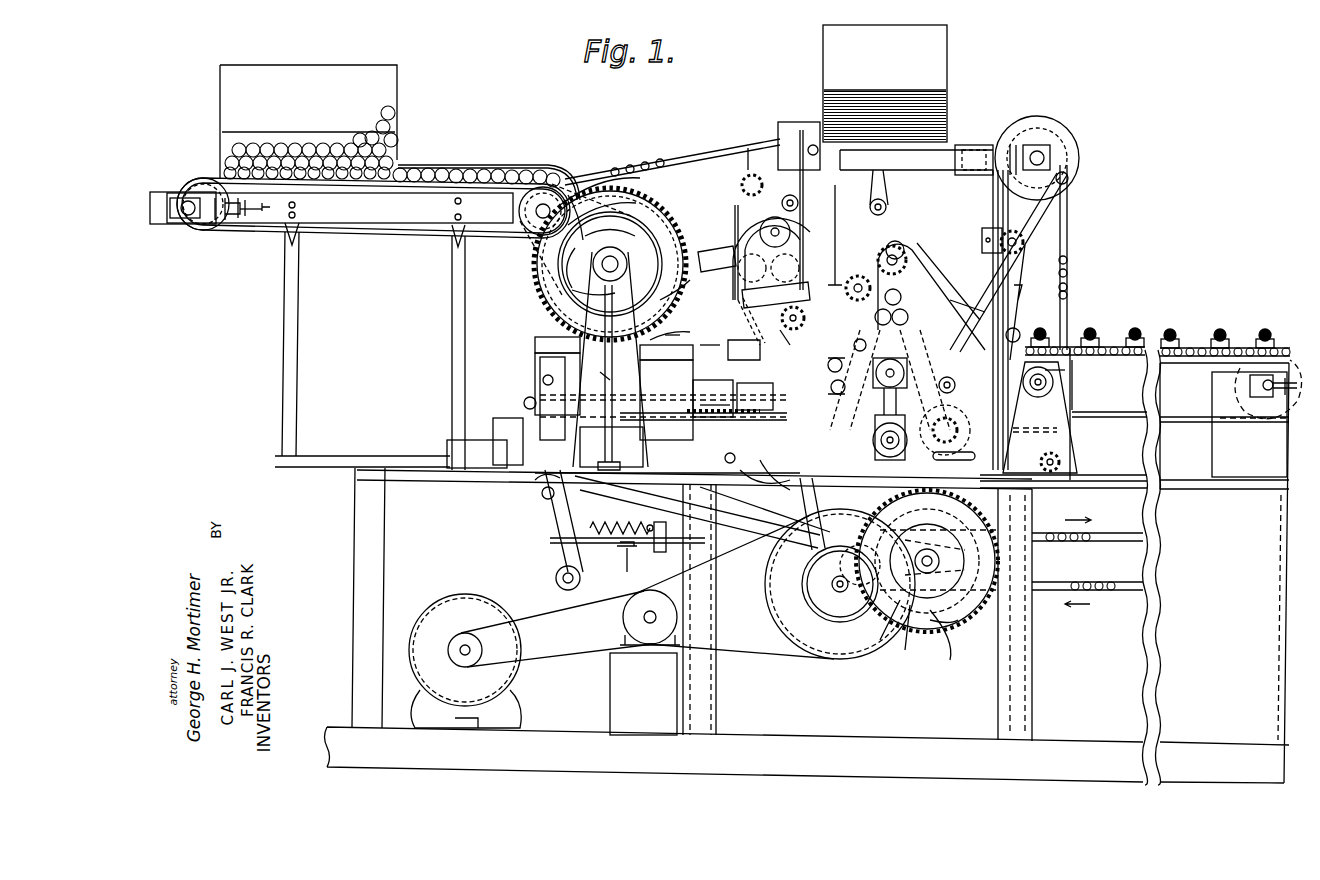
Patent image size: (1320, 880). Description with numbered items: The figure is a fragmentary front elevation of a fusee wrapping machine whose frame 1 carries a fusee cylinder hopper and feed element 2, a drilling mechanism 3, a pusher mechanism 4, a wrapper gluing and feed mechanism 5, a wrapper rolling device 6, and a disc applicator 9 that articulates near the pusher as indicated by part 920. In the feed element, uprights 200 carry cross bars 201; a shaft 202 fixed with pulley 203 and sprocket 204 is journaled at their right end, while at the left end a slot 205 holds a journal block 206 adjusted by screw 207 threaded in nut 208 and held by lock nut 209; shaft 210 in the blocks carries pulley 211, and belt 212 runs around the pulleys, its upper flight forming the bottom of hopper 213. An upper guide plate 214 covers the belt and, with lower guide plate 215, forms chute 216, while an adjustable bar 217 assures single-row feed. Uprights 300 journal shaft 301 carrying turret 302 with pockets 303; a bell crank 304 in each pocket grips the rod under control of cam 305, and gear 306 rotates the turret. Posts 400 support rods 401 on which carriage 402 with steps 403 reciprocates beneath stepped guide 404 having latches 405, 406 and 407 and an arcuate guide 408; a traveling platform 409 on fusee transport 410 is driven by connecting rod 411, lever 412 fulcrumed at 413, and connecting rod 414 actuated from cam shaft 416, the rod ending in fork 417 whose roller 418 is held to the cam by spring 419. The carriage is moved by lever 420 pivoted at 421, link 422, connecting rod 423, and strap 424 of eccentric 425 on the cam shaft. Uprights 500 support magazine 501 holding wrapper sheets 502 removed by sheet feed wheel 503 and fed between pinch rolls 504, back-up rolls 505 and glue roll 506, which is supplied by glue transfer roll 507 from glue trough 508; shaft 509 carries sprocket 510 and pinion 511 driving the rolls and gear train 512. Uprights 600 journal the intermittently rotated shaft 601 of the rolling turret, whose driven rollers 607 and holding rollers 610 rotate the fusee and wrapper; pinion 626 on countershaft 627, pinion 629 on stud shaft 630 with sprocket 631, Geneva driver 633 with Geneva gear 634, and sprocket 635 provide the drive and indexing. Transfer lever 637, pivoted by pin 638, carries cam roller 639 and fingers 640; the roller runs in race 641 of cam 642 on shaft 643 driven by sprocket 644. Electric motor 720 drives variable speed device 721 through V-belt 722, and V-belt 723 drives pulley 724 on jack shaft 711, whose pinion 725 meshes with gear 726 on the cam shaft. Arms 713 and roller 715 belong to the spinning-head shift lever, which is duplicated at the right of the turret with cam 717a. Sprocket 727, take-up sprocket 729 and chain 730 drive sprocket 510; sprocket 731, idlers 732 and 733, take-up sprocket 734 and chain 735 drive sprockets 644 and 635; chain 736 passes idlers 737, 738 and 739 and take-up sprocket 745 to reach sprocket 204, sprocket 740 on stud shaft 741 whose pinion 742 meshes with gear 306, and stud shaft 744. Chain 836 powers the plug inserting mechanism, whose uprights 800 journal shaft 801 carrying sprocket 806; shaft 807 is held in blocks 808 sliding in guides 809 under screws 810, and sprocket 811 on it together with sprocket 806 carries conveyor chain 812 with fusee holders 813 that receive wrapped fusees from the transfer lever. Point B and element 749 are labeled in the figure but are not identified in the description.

The machine frame 1 is at (346, 541).
The feed conveyor 2 is at (408, 108).
The transfer gear assembly 3 is at (648, 220).
The filling station 4 is at (536, 348).
The liquid supply station 5 is at (800, 113).
The drive assembly 6 is at (848, 343).
The capping station 9 is at (744, 336).
The conveyor legs 200 is at (300, 282).
The conveyor frame rail 201 is at (330, 228).
The guide arm 202 is at (596, 192).
The conveyor drive chain 203 is at (530, 246).
The conveyor drive pulley 204 is at (520, 236).
The tension bracket 205 is at (165, 224).
The bearing plate 206 is at (209, 232).
The adjusting rod 207 is at (258, 222).
The bearing block 208 is at (226, 226).
The adjusting screw 209 is at (238, 197).
The conveyor idler pulley 210 is at (203, 193).
The pulley shaft 211 is at (192, 230).
The conveyor belt 212 is at (373, 190).
The hopper 213 is at (220, 101).
The articles on belt 214 is at (463, 168).
The guide lever 215 is at (570, 200).
The guide plate 216 is at (592, 212).
The articles in hopper 217 is at (396, 160).
The adjustment point B is at (273, 207).
The transfer gear 300 is at (598, 302).
The gear hub 301 is at (627, 265).
The gear rim ring 302 is at (661, 243).
The cam segment 303 is at (582, 287).
The cam arm 304 is at (610, 226).
The cam follower 305 is at (575, 266).
The connecting rod 306 is at (670, 300).
The table 400 is at (507, 458).
The table plate 401 is at (726, 350).
The filling head block 402 is at (535, 368).
The support bracket 403 is at (535, 348).
The actuating arm 404 is at (678, 331).
The link 405 is at (675, 328).
The pivot link 406 is at (701, 347).
The lever 407 is at (793, 334).
The cam link 408 is at (680, 288).
The rollers 409 is at (836, 388).
The slide 410 is at (717, 395).
The slide housing 411 is at (712, 396).
The guide block 412 is at (524, 405).
The pivot pin 413 is at (542, 494).
The adjusting rod 414 is at (612, 544).
The cam disc 416 is at (927, 573).
The cam track 417 is at (958, 586).
The cam follower 418 is at (962, 571).
The spring 419 is at (621, 521).
The lever arm 420 is at (555, 518).
The lever pivot 421 is at (556, 580).
The connecting link 422 is at (560, 476).
The push rod 423 is at (708, 506).
The crank 424 is at (915, 640).
The cam gear 425 is at (925, 517).
The supply shaft 500 is at (992, 200).
The liquid tank 501 is at (947, 67).
The liquid 502 is at (877, 90).
The supply pipe 503 is at (916, 160).
The bracket roller 504 is at (872, 200).
The support post 505 is at (848, 235).
The valve plate 506 is at (776, 295).
The valve rollers 507 is at (745, 283).
The nozzle block 508 is at (718, 248).
The pulley 509 is at (762, 228).
The guide arch 510 is at (735, 226).
The gear 511 is at (745, 210).
The mounting bracket 512 is at (780, 140).
The drive housing 600 is at (875, 445).
The drive shaft bearing 601 is at (823, 375).
The idler roller 607 is at (867, 345).
The guide rollers 610 is at (835, 358).
The gear 626 is at (903, 298).
The belt run 627 is at (945, 282).
The gear 629 is at (902, 248).
The sprocket 630 is at (908, 258).
The sprocket hub 631 is at (910, 268).
The idler 633 is at (1015, 328).
The gear 634 is at (910, 316).
The gear 635 is at (948, 425).
The bearing block 637 is at (975, 248).
The sprocket 638 is at (1024, 240).
The pulley pin 639 is at (1070, 181).
The roller 640 is at (934, 380).
The pulley shaft 641 is at (1065, 158).
The pulley 642 is at (1055, 125).
The bearing 643 is at (1030, 150).
The belt 644 is at (1048, 208).
The main shaft 711 is at (841, 592).
The pivot bearing 713 is at (870, 446).
The gear 715 is at (900, 632).
The cam 717a is at (958, 626).
The motor 720 is at (440, 612).
The reduction pulley 721 is at (647, 633).
The motor belt 722 is at (560, 652).
The drive belt 723 is at (760, 650).
The main drive wheel 724 is at (765, 587).
The hub 725 is at (833, 592).
The cam follower arm 726 is at (960, 660).
The wheel rim 727 is at (806, 575).
The sprocket 729 is at (771, 321).
The connecting rod 730 is at (804, 492).
The shaft 731 is at (965, 553).
The sprocket 732 is at (1040, 463).
The shaft 733 is at (1065, 370).
The link 734 is at (945, 460).
The chain rod 735 is at (1068, 278).
The drive chain 736 is at (666, 163).
The sprocket 737 is at (859, 276).
The chain anchor 738 is at (748, 148).
The roller 739 is at (543, 386).
The link 740 is at (594, 366).
The slide block 741 is at (664, 400).
The rack bar 742 is at (615, 421).
The pin 744 is at (740, 462).
The link 745 is at (775, 475).
The lever 749 is at (752, 489).
The discharge conveyor frame 800 is at (1078, 458).
The conveyor drive bracket 801 is at (1040, 395).
The support plate 806 is at (1075, 384).
The end bearing 807 is at (1282, 336).
The shaft 808 is at (1247, 398).
The bearing pin 809 is at (1283, 400).
The end housing 810 is at (1287, 450).
The guide 811 is at (1295, 340).
The conveyor side plate 812 is at (1200, 366).
The carrier clips 813 is at (1175, 336).
The return chain 836 is at (1095, 580).
The slide block 920 is at (755, 396).